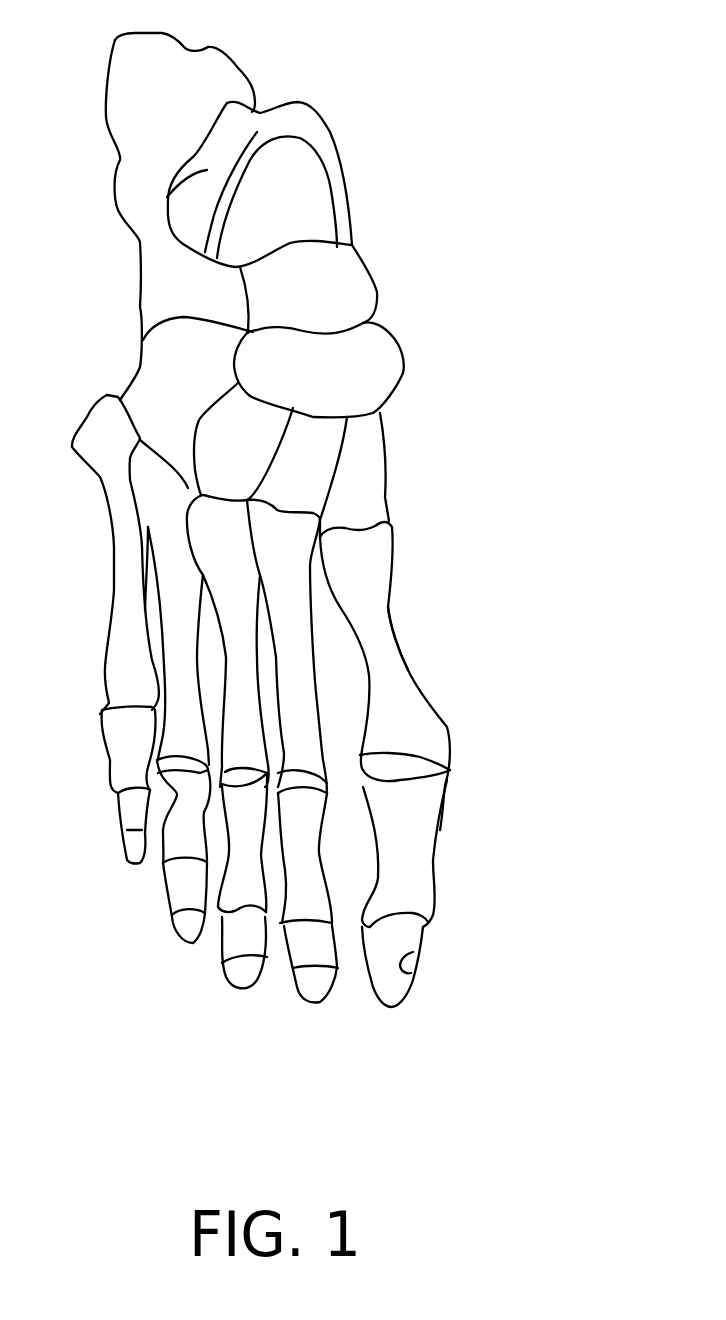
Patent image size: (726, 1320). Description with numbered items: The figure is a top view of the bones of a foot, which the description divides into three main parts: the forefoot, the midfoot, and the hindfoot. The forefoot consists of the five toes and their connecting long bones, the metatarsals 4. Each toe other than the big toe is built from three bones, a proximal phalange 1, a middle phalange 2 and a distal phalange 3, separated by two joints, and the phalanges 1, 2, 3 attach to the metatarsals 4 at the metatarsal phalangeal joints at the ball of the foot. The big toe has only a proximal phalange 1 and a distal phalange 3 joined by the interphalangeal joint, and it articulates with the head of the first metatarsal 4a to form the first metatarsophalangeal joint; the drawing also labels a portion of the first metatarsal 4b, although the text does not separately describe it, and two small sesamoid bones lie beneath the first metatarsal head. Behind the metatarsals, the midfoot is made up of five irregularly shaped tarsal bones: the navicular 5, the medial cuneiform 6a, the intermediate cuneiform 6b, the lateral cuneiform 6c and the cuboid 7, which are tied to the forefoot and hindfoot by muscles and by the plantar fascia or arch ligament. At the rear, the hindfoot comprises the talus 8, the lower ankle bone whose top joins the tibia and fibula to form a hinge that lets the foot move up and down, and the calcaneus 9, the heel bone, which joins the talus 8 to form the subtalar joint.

The proximal phalange 1 is at (307, 937).
The middle phalange 2 is at (240, 877).
The distal phalange 3 is at (390, 1008).
The metatarsals 4 is at (245, 617).
The first metatarsal 4a is at (393, 663).
The first metatarsal head 4b is at (320, 686).
The navicular 5 is at (363, 367).
The medial cuneiform 6a is at (367, 512).
The intermediate cuneiform 6b is at (307, 480).
The lateral cuneiform 6c is at (240, 452).
The cuboid 7 is at (148, 377).
The talus 8 is at (293, 193).
The calcaneus 9 is at (150, 95).